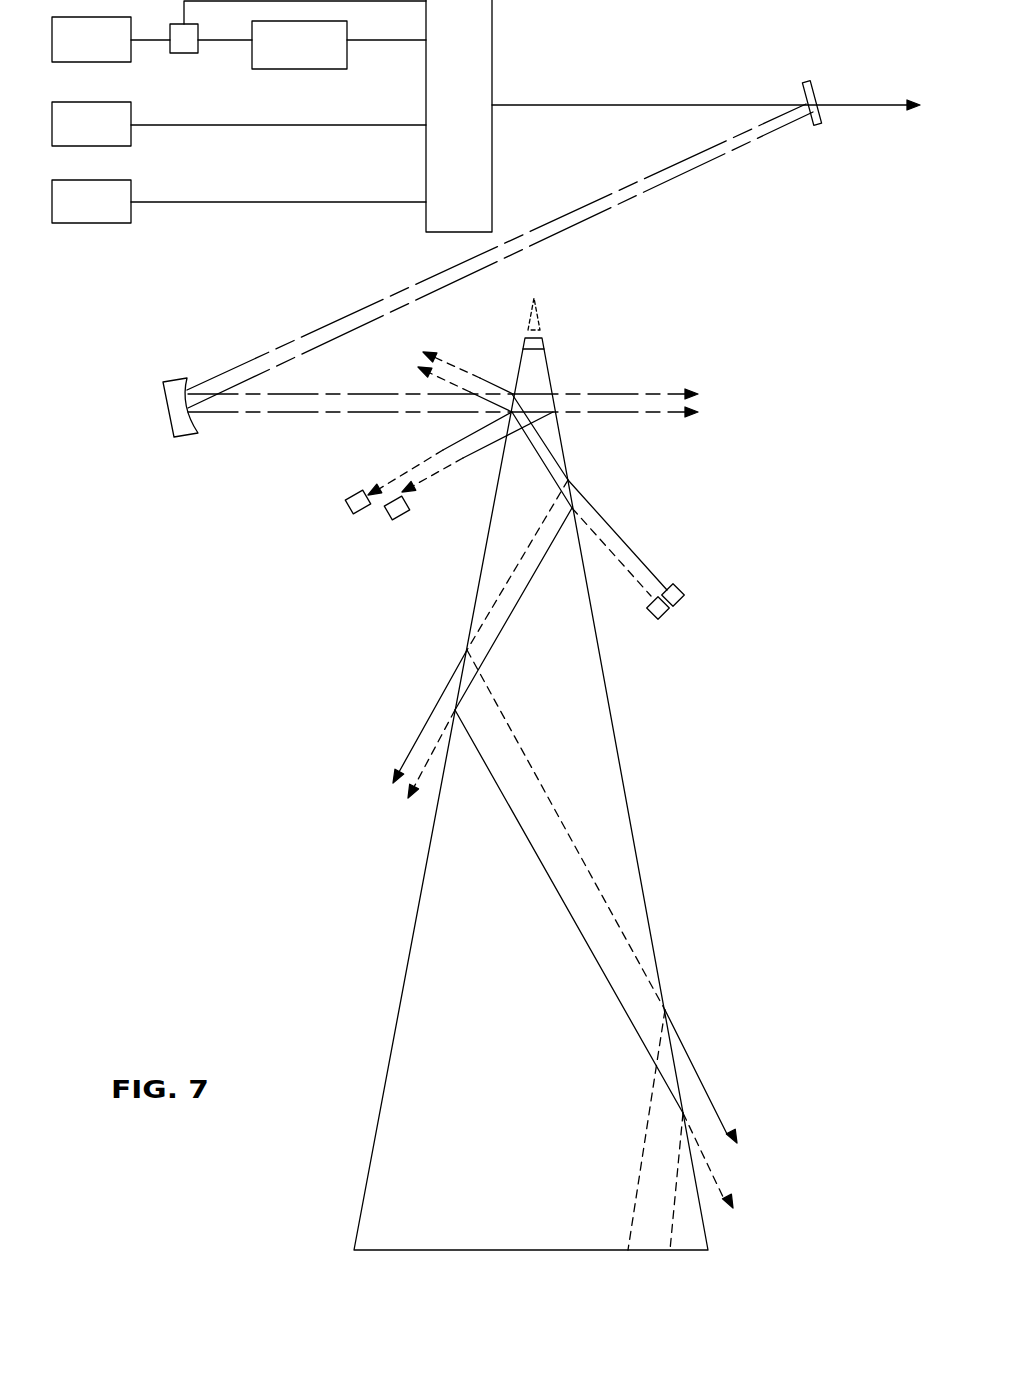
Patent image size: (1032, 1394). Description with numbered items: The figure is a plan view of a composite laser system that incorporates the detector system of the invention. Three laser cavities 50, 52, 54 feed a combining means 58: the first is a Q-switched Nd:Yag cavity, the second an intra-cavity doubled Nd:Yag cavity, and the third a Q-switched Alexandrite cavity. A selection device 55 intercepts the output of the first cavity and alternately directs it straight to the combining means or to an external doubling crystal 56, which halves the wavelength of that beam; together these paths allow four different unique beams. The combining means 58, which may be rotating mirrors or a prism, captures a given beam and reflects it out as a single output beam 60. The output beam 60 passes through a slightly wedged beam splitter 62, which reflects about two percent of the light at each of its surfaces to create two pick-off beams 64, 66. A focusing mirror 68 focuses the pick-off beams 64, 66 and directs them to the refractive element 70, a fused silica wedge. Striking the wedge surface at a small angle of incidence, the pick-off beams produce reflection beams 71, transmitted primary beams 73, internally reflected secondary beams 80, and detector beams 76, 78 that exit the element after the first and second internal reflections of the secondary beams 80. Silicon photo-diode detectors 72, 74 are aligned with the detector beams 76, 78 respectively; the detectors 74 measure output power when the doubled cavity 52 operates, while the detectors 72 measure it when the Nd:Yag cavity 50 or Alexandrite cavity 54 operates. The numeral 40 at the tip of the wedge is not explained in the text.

The tip of probe 40 is at (542, 333).
The laser cavity 50 is at (111, 39).
The laser cavity 52 is at (239, 124).
The laser cavity 54 is at (239, 201).
The selection device 55 is at (183, 55).
The external doubling crystal 56 is at (339, 45).
The combining means 58 is at (459, 116).
The output beam 60 is at (660, 103).
The beam splitter 62 is at (813, 80).
The pick-off beam 64 is at (593, 203).
The pick-off beam 66 is at (633, 199).
The focusing mirror 68 is at (177, 380).
The refractive element 70 is at (547, 360).
The reflection beams 71 is at (470, 370).
The detectors 72 is at (662, 620).
The primary beams 73 is at (673, 392).
The detectors 74 is at (390, 520).
The detector beams 76 is at (632, 550).
The detector beams 78 is at (418, 467).
The secondary beams 80 is at (517, 560).